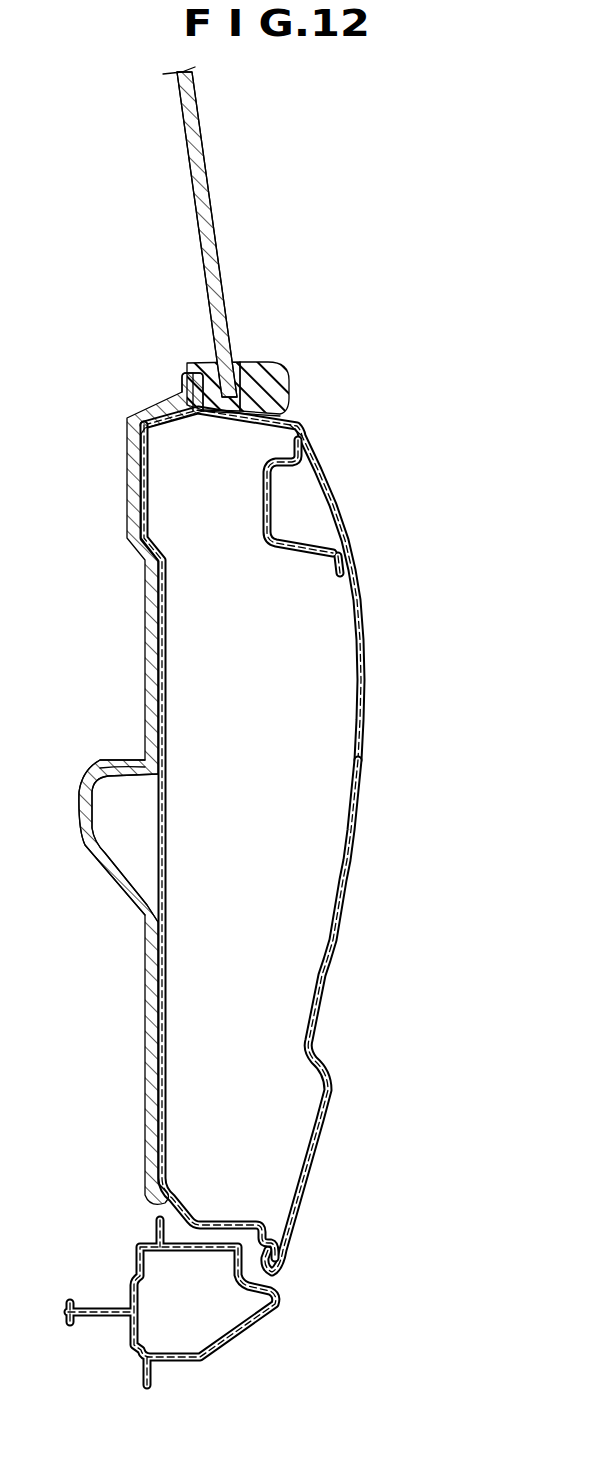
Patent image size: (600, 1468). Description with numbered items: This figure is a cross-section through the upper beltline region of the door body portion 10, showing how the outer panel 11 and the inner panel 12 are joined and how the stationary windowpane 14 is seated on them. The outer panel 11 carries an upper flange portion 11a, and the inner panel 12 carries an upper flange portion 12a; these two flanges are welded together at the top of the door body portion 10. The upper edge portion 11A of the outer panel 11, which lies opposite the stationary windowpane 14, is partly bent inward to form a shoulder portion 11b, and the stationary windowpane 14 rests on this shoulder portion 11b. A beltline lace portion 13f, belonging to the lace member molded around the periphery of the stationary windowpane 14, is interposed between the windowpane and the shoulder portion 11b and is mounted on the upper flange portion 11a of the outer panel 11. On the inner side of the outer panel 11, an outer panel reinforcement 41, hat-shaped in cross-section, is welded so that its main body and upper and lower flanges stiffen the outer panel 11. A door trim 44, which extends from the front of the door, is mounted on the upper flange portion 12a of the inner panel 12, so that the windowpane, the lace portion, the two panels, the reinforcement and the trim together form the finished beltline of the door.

The door body portion 10 is at (347, 825).
The outer panel 11 is at (363, 683).
The upper edge portion 11A is at (308, 428).
The upper flange portion 11a is at (218, 368).
The shoulder portion 11b is at (240, 422).
The inner panel 12 is at (166, 812).
The upper flange portion 12a is at (184, 386).
The beltline lace portion 13f is at (283, 374).
The stationary windowpane 14 is at (232, 272).
The outer panel reinforcement 41 is at (296, 545).
The door trim 44 is at (98, 738).